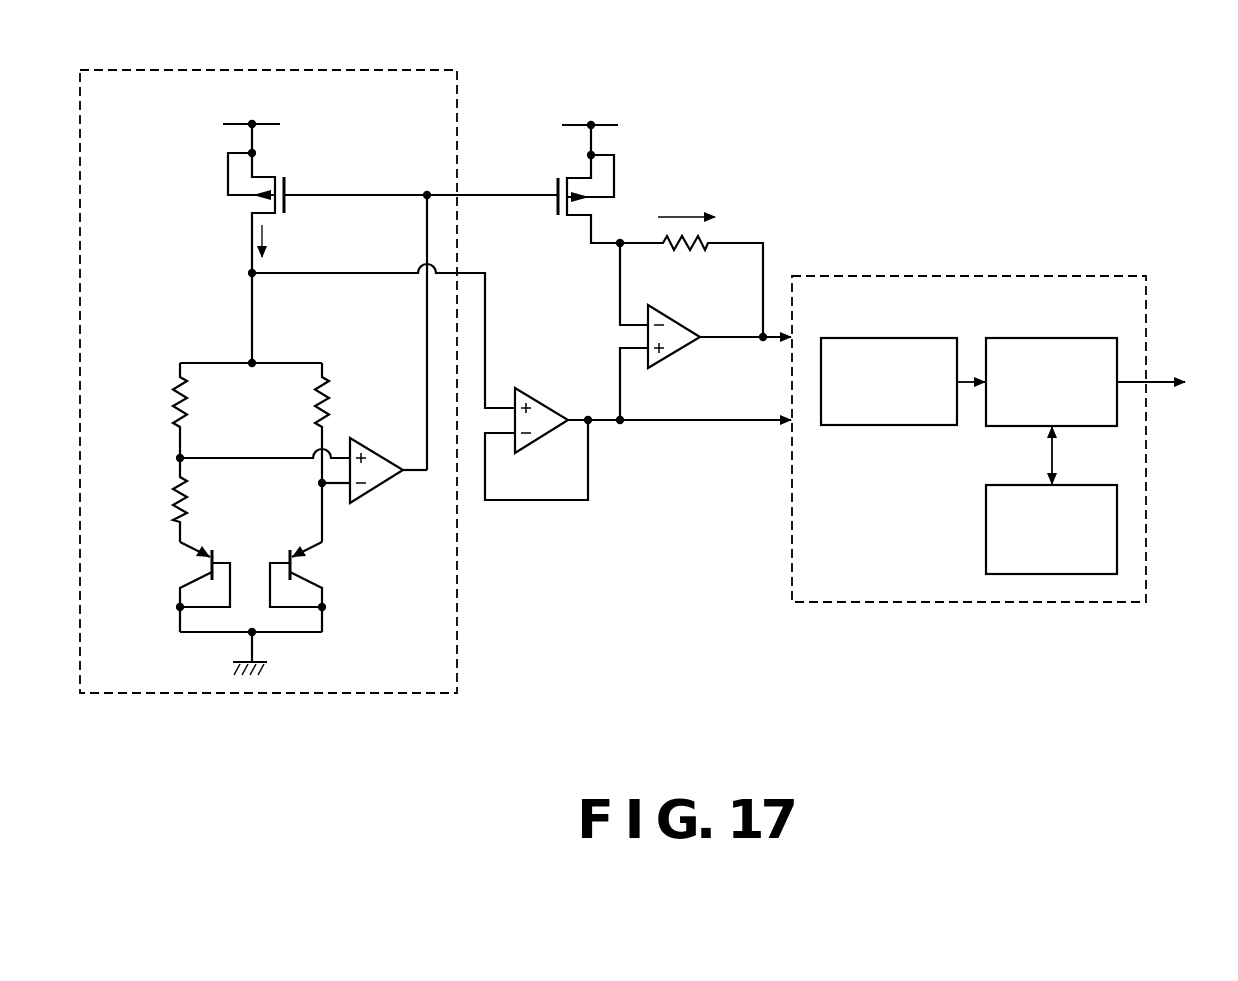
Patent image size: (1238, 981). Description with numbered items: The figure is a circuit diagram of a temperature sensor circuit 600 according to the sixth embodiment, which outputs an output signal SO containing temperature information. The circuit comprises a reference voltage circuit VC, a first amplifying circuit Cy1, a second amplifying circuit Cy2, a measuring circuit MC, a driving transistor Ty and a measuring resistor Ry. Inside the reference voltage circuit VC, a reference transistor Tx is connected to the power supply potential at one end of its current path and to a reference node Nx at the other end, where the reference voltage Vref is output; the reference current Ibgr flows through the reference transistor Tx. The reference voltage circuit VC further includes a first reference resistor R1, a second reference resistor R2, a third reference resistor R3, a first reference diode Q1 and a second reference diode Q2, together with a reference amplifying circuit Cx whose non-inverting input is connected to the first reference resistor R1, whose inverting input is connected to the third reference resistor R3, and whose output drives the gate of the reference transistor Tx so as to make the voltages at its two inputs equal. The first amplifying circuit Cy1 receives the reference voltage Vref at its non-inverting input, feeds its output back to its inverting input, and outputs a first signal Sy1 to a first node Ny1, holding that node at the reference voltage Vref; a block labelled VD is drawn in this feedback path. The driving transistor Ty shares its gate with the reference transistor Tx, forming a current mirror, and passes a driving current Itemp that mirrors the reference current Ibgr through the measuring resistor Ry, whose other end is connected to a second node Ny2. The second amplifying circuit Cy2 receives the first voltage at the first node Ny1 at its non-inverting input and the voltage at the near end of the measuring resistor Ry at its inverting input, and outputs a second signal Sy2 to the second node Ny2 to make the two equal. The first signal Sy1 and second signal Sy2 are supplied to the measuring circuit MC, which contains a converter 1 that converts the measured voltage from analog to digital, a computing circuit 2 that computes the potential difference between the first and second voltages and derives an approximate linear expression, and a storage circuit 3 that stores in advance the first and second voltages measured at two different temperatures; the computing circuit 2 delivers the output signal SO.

The temperature sensor circuit 600 is at (717, 728).
The reference voltage circuit VC is at (286, 70).
The reference transistor Tx is at (265, 176).
The driving transistor Ty is at (578, 176).
The reference current Ibgr is at (290, 241).
The reference node Nx is at (250, 273).
The reference voltage Vref is at (383, 325).
The first reference resistor R1 is at (173, 393).
The second reference resistor R2 is at (173, 490).
The third reference resistor R3 is at (338, 400).
The first reference diode Q1 is at (190, 543).
The second reference diode Q2 is at (312, 543).
The reference amplifying circuit Cx is at (384, 492).
The first amplifying circuit Cy1 is at (545, 406).
The second amplifying circuit Cy2 is at (648, 338).
The voltage source VD is at (536, 460).
The first node Ny1 is at (592, 424).
The second node Ny2 is at (763, 341).
The first signal Sy1 is at (679, 405).
The second signal Sy2 is at (745, 322).
The driving current Itemp is at (695, 199).
The measuring resistor Ry is at (672, 254).
The measuring circuit MC is at (992, 276).
The converter 1 is at (905, 338).
The computing circuit 2 is at (1035, 338).
The storage circuit 3 is at (986, 527).
The output signal SO is at (1173, 383).